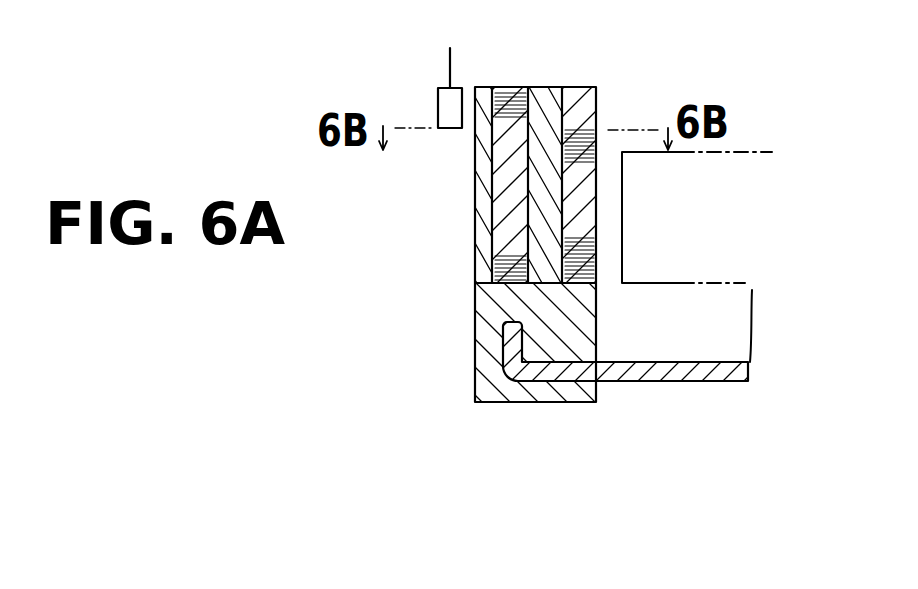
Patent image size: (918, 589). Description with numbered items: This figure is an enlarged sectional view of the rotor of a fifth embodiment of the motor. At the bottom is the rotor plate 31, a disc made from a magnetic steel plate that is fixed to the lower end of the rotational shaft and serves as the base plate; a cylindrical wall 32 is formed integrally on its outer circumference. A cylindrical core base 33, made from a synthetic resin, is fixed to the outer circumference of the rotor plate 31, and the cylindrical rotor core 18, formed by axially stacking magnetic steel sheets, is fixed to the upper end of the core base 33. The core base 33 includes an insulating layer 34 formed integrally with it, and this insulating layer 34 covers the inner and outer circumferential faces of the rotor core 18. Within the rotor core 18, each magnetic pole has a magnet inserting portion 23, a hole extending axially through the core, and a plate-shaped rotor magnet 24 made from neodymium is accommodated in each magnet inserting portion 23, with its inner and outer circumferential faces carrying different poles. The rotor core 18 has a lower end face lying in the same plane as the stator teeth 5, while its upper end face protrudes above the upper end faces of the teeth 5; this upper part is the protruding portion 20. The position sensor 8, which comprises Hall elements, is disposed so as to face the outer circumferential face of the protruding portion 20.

The protruding portion 20 is at (507, 87).
The rotor magnet 24 is at (527, 176).
The magnet inserting portion 23 is at (532, 234).
The rotor core 18 is at (597, 247).
The insulating layer 34 is at (474, 265).
The core base 33 is at (474, 319).
The cylindrical wall 32 is at (503, 358).
The rotor plate 31 is at (715, 383).
The teeth 5 is at (748, 150).
The position sensor 8 is at (438, 98).